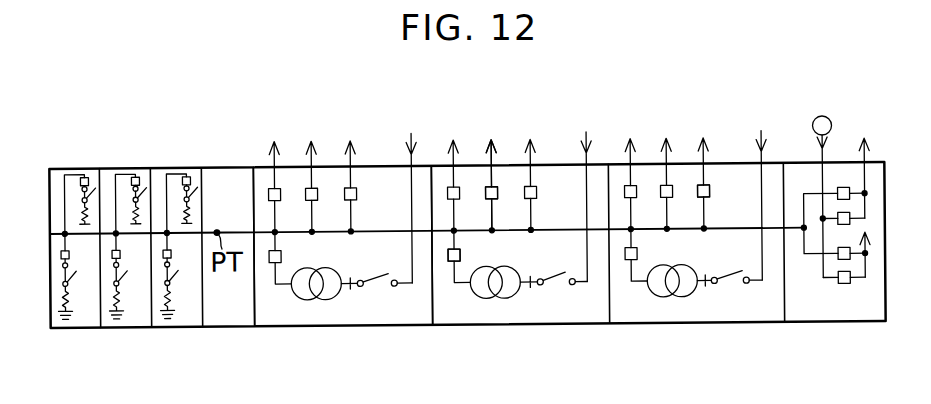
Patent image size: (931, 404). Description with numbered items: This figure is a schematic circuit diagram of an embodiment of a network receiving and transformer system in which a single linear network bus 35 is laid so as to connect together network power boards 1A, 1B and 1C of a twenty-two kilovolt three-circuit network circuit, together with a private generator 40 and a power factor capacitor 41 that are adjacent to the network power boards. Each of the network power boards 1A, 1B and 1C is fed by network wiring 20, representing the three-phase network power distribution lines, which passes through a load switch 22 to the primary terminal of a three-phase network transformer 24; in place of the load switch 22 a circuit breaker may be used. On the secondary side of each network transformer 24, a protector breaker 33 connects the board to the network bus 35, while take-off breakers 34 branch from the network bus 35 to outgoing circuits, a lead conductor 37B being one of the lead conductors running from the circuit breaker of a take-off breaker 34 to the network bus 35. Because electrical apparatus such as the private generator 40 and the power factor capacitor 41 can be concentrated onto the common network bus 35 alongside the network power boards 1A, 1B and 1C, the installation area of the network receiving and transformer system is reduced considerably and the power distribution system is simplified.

The network power board 1A is at (318, 304).
The network power board 1B is at (513, 311).
The network power board 1C is at (670, 307).
The network wiring 20 is at (762, 153).
The load switch 22 is at (378, 327).
The three-phase network transformer 24 is at (478, 297).
The protector breaker 33 is at (461, 253).
The take-off breaker 34 is at (710, 192).
The network bus 35 is at (381, 230).
The lead conductor 37B is at (493, 150).
The private generator 40 is at (833, 126).
The power factor capacitor 41 is at (81, 163).